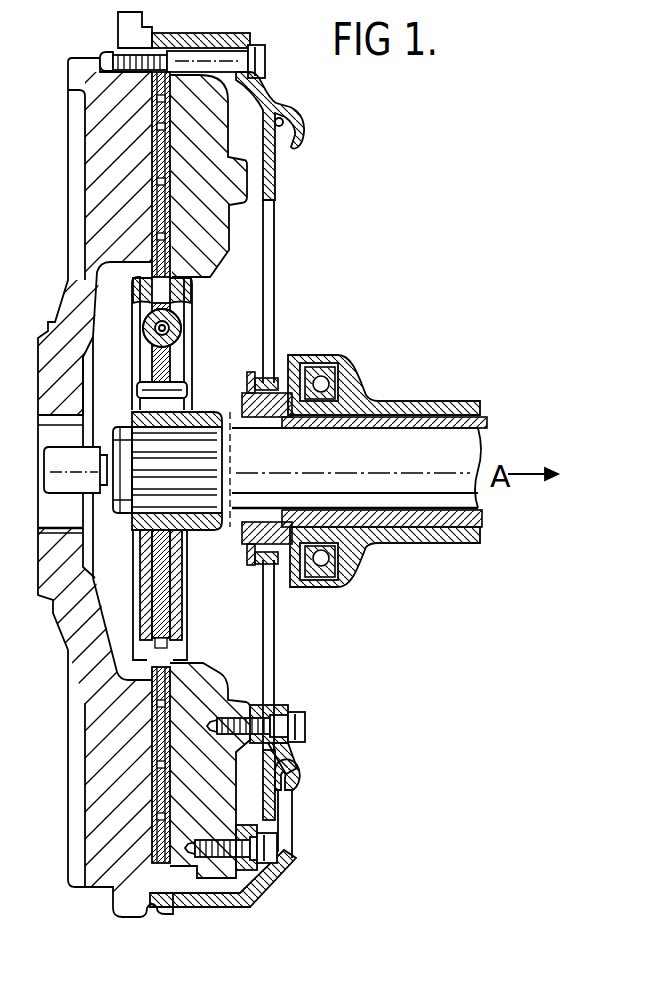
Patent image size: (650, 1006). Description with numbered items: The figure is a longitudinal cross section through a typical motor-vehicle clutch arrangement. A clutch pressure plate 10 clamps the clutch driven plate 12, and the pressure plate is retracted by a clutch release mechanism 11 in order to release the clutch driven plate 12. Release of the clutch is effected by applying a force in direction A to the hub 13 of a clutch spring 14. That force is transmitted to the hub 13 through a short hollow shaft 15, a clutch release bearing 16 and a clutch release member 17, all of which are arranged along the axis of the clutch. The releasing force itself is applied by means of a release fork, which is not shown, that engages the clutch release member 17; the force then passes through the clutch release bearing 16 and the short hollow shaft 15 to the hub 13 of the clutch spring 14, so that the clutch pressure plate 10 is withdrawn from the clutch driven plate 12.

The clutch pressure plate 10 is at (217, 235).
The clutch release mechanism 11 is at (353, 352).
The clutch driven plate 12 is at (158, 142).
The hub 13 is at (247, 565).
The clutch spring 14 is at (268, 315).
The short hollow shaft 15 is at (270, 406).
The clutch release bearing 16 is at (326, 565).
The clutch release member 17 is at (465, 535).